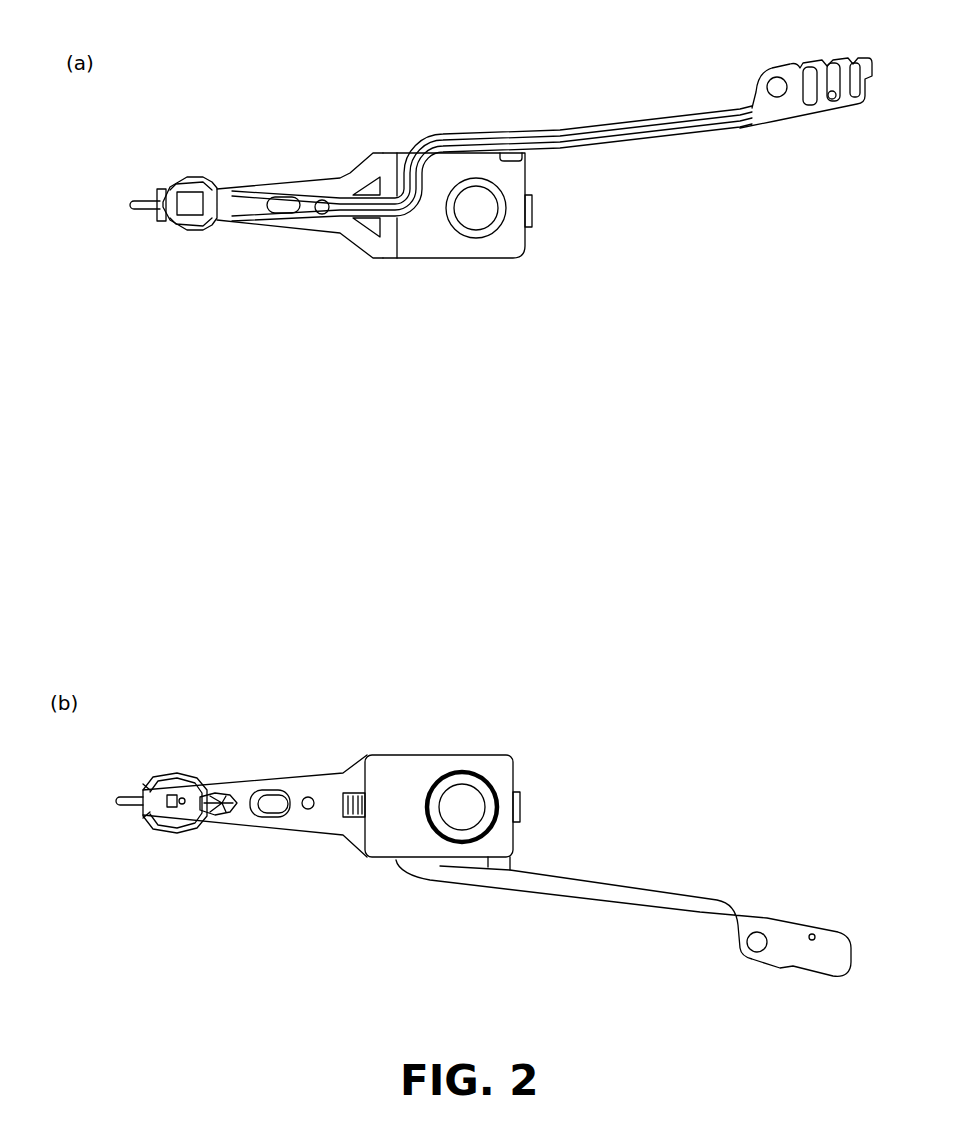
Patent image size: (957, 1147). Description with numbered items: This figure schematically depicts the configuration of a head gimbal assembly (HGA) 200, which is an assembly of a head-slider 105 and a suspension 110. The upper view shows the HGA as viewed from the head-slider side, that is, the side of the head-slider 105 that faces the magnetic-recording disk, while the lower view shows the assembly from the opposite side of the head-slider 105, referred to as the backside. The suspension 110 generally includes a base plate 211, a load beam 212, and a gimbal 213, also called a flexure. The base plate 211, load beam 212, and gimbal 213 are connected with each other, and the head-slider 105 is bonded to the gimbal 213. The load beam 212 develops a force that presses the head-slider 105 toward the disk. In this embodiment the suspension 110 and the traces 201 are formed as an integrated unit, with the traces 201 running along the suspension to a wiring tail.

The head gimbal assembly 200 is at (222, 30).
The suspension 110 is at (384, 131).
The traces 201 is at (555, 128).
The base plate 211 is at (522, 259).
The load beam 212 is at (312, 183).
The gimbal 213 is at (213, 184).
The head-slider 105 is at (182, 218).